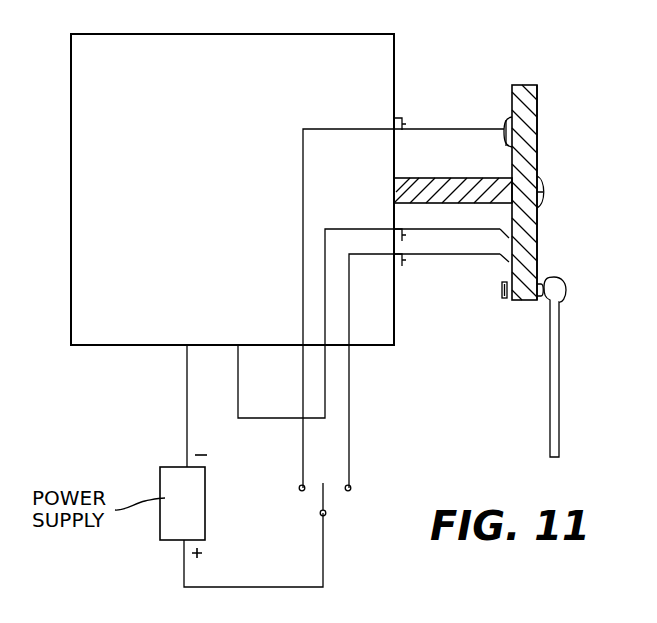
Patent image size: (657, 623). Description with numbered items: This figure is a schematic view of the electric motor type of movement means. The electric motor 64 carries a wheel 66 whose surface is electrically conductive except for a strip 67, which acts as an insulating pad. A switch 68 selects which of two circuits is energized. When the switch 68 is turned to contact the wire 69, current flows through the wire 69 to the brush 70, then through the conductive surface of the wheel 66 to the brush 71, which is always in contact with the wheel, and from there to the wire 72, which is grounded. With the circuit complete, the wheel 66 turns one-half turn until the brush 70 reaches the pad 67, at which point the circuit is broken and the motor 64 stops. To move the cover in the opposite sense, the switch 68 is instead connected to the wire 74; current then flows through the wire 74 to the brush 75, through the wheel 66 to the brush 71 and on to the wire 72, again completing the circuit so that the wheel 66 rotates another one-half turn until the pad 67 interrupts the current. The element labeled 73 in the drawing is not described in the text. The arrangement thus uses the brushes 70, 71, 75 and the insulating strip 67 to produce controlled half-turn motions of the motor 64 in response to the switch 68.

The electric motor 64 is at (520, 85).
The wheel 66 is at (566, 177).
The strip 67 is at (506, 122).
The switch 68 is at (338, 502).
The wire 69 is at (349, 413).
The brush 70 is at (506, 266).
The brush 71 is at (509, 239).
The wire 72 is at (438, 229).
The lever arm 73 is at (561, 375).
The wire 74 is at (300, 450).
The brush 75 is at (504, 126).